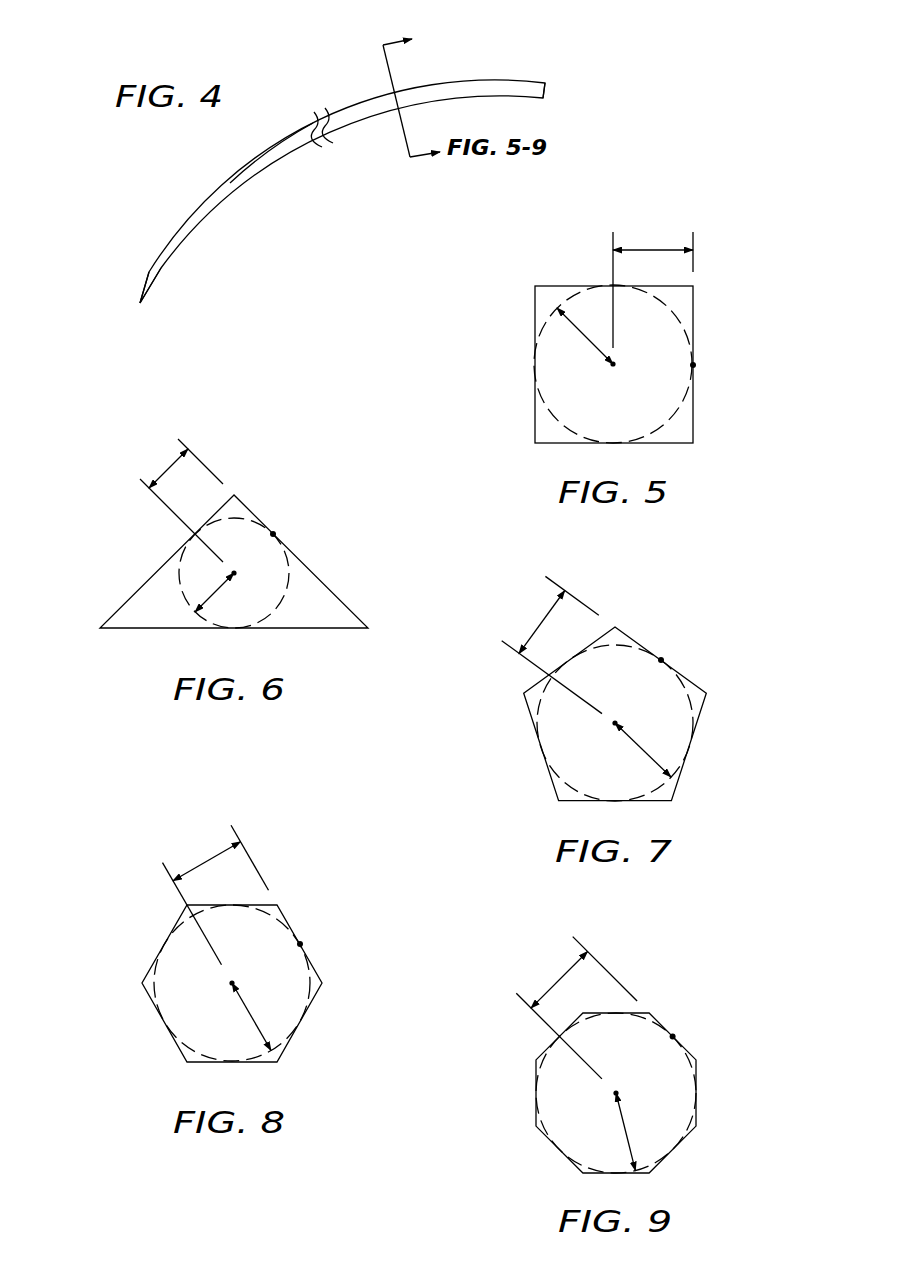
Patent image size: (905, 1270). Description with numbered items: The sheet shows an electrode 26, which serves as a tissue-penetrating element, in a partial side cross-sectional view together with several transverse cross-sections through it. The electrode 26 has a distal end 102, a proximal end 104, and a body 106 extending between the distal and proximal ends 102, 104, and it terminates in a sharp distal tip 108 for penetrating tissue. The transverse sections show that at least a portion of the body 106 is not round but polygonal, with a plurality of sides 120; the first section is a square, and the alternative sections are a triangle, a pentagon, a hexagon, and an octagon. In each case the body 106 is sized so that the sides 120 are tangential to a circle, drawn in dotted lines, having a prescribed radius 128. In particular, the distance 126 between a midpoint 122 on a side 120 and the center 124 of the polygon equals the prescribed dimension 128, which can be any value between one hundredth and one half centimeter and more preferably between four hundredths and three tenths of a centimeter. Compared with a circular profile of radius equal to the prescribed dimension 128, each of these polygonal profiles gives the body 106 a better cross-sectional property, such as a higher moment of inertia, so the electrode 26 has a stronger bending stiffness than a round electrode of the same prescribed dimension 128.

In FIG. 4, the electrode 26 is at (477, 53).
In FIG. 5, the electrode 26 is at (578, 253).
In FIG. 6, the electrode 26 is at (252, 465).
In FIG. 7, the electrode 26 is at (748, 683).
In FIG. 8, the electrode 26 is at (338, 905).
In FIG. 9, the electrode 26 is at (700, 1002).
In FIG. 4, the distal end 102 is at (167, 267).
In FIG. 4, the proximal end 104 is at (537, 97).
In FIG. 4, the body 106 is at (287, 153).
In FIG. 4, the sharp distal tip 108 is at (145, 287).
In FIG. 5, the sides 120 is at (693, 306).
In FIG. 6, the sides 120 is at (247, 502).
In FIG. 7, the sides 120 is at (630, 630).
In FIG. 8, the sides 120 is at (288, 918).
In FIG. 9, the sides 120 is at (658, 1020).
In FIG. 5, the midpoint 122 is at (693, 365).
In FIG. 6, the midpoint 122 is at (273, 533).
In FIG. 7, the midpoint 122 is at (662, 660).
In FIG. 8, the midpoint 122 is at (300, 944).
In FIG. 9, the midpoint 122 is at (672, 1037).
In FIG. 5, the center 124 is at (613, 364).
In FIG. 6, the center 124 is at (236, 573).
In FIG. 7, the center 124 is at (617, 723).
In FIG. 8, the center 124 is at (233, 983).
In FIG. 9, the center 124 is at (617, 1093).
In FIG. 5, the distance 126 is at (652, 250).
In FIG. 6, the distance 126 is at (177, 457).
In FIG. 7, the distance 126 is at (538, 622).
In FIG. 8, the distance 126 is at (208, 855).
In FIG. 9, the distance 126 is at (557, 978).
In FIG. 5, the prescribed radius 128 is at (587, 337).
In FIG. 6, the prescribed radius 128 is at (215, 590).
In FIG. 7, the prescribed radius 128 is at (645, 752).
In FIG. 8, the prescribed radius 128 is at (255, 1018).
In FIG. 9, the prescribed radius 128 is at (630, 1133).